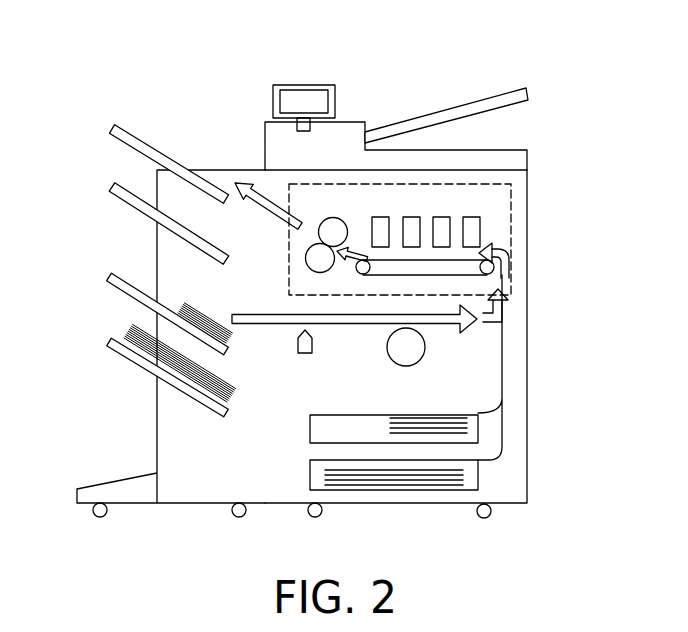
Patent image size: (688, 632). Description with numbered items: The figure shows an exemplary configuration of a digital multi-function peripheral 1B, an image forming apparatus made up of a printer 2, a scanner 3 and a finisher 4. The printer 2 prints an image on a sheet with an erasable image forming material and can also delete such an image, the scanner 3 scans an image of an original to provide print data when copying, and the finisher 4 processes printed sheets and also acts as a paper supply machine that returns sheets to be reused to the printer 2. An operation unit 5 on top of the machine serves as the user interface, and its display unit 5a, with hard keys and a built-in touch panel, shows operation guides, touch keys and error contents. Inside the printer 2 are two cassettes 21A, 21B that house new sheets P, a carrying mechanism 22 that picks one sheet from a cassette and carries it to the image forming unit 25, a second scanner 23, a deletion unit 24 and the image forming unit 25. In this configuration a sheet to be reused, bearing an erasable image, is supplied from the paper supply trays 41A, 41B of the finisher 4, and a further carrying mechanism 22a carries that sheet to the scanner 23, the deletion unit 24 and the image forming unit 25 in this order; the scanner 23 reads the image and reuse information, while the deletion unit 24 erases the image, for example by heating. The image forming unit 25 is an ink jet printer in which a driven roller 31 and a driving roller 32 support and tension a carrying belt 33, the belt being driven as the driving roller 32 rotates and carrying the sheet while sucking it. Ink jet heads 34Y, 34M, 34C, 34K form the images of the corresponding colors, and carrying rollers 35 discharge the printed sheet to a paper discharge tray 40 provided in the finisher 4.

The digital multi-function peripheral 1B is at (245, 103).
The printer 2 is at (534, 404).
The scanner 3 is at (352, 116).
The finisher 4 is at (150, 437).
The operation unit 5 is at (323, 79).
The display unit 5a is at (305, 100).
The cassette 21A is at (310, 428).
The cassette 21B is at (310, 473).
The carrying mechanism 22 is at (504, 348).
The carrying mechanism 22a is at (328, 325).
The scanner 23 is at (303, 353).
The deletion unit 24 is at (407, 353).
The image forming unit 25 is at (511, 213).
The driven roller 31 is at (487, 273).
The driving roller 32 is at (363, 273).
The carrying belt 33 is at (437, 268).
The ink jet head 34K is at (381, 217).
The ink jet head 34C is at (412, 217).
The ink jet head 34M is at (442, 217).
The ink jet head 34Y is at (472, 217).
The carrying rollers 35 is at (318, 258).
The paper discharge tray 40 is at (112, 196).
The paper supply tray 41A is at (123, 290).
The paper supply tray 41B is at (121, 353).
The sheets P is at (208, 300).